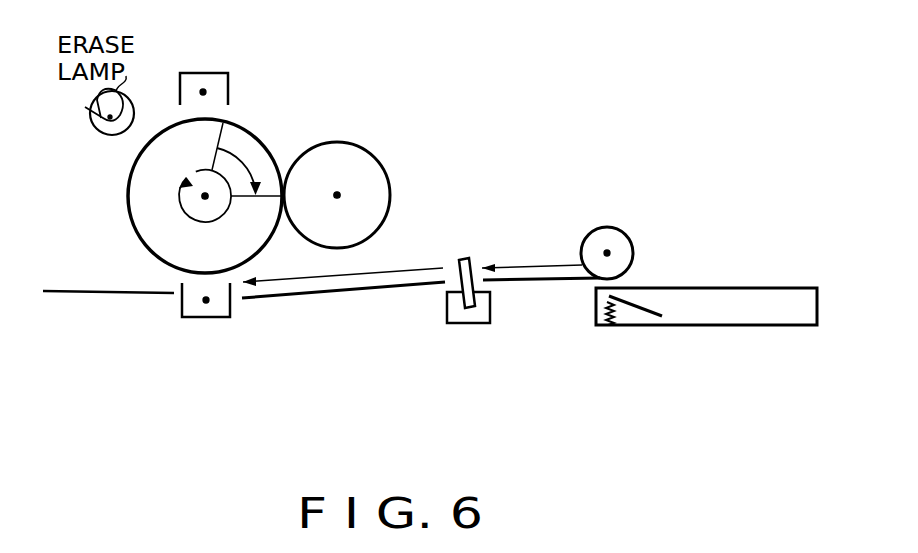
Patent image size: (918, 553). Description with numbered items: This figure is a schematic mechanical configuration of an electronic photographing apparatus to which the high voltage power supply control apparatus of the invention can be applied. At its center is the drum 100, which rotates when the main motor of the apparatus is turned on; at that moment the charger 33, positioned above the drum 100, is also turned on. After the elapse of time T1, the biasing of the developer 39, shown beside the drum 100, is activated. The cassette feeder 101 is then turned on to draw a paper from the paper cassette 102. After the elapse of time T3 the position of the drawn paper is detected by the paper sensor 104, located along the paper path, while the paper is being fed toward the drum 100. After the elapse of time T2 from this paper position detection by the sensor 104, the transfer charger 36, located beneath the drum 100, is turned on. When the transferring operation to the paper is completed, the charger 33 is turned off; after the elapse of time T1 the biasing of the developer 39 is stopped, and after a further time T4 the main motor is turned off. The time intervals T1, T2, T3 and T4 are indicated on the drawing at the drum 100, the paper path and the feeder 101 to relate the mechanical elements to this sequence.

The charger 33 is at (202, 74).
The transfer charger 36 is at (206, 317).
The developer 39 is at (358, 150).
The drum 100 is at (130, 203).
The cassette feeder 101 is at (625, 237).
The paper cassette 102 is at (615, 325).
The paper sensor 104 is at (448, 323).
The time T1 is at (243, 160).
The time T2 is at (391, 269).
The time T3 is at (520, 266).
The time T4 is at (191, 221).